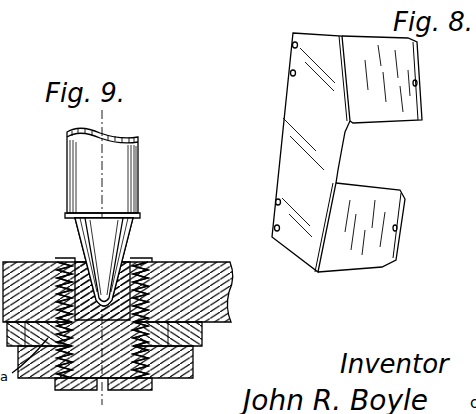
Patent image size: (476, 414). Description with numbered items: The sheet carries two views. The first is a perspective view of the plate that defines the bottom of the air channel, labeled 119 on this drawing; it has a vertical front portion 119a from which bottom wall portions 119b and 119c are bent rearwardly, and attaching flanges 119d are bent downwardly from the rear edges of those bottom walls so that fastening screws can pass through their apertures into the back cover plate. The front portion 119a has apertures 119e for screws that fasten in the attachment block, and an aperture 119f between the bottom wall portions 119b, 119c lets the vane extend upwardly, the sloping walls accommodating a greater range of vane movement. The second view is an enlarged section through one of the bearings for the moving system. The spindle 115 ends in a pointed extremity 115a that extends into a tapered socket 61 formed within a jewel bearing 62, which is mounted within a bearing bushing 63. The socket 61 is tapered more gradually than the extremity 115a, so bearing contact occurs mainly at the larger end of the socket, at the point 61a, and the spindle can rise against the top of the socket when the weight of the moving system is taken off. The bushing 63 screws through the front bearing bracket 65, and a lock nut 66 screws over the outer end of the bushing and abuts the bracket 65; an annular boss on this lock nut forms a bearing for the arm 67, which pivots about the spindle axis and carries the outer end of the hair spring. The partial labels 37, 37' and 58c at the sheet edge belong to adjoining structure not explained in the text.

In FIG. 9, the nozzle body 115 is at (139, 171).
In FIG. 9, the nozzle passage 115a is at (113, 258).
In FIG. 9, the tapered socket 61 is at (152, 261).
In FIG. 9, the bearing contact point 61a is at (92, 252).
In FIG. 9, the jewel bearing 62 is at (60, 261).
In FIG. 9, the bearing bushing 63 is at (67, 388).
In FIG. 9, the front bearing bracket 65 is at (236, 285).
In FIG. 9, the lock nut 66 is at (37, 379).
In FIG. 9, the arm 67 is at (204, 334).
In FIG. 9, the element 37 is at (9, 94).
In FIG. 9, the element 37 prime 37' is at (11, 134).
In FIG. 9, the element 58c is at (13, 176).
In FIG. 8, the bracket 119 is at (347, 150).
In FIG. 8, the flat portion of bracket 119a is at (287, 163).
In FIG. 8, the lower bent tab 119b is at (353, 266).
In FIG. 8, the upper bent tab 119c is at (370, 45).
In FIG. 8, the flange holes 119d is at (412, 64).
In FIG. 8, the mounting holes 119e is at (275, 226).
In FIG. 8, the bracket edge 119f is at (410, 150).